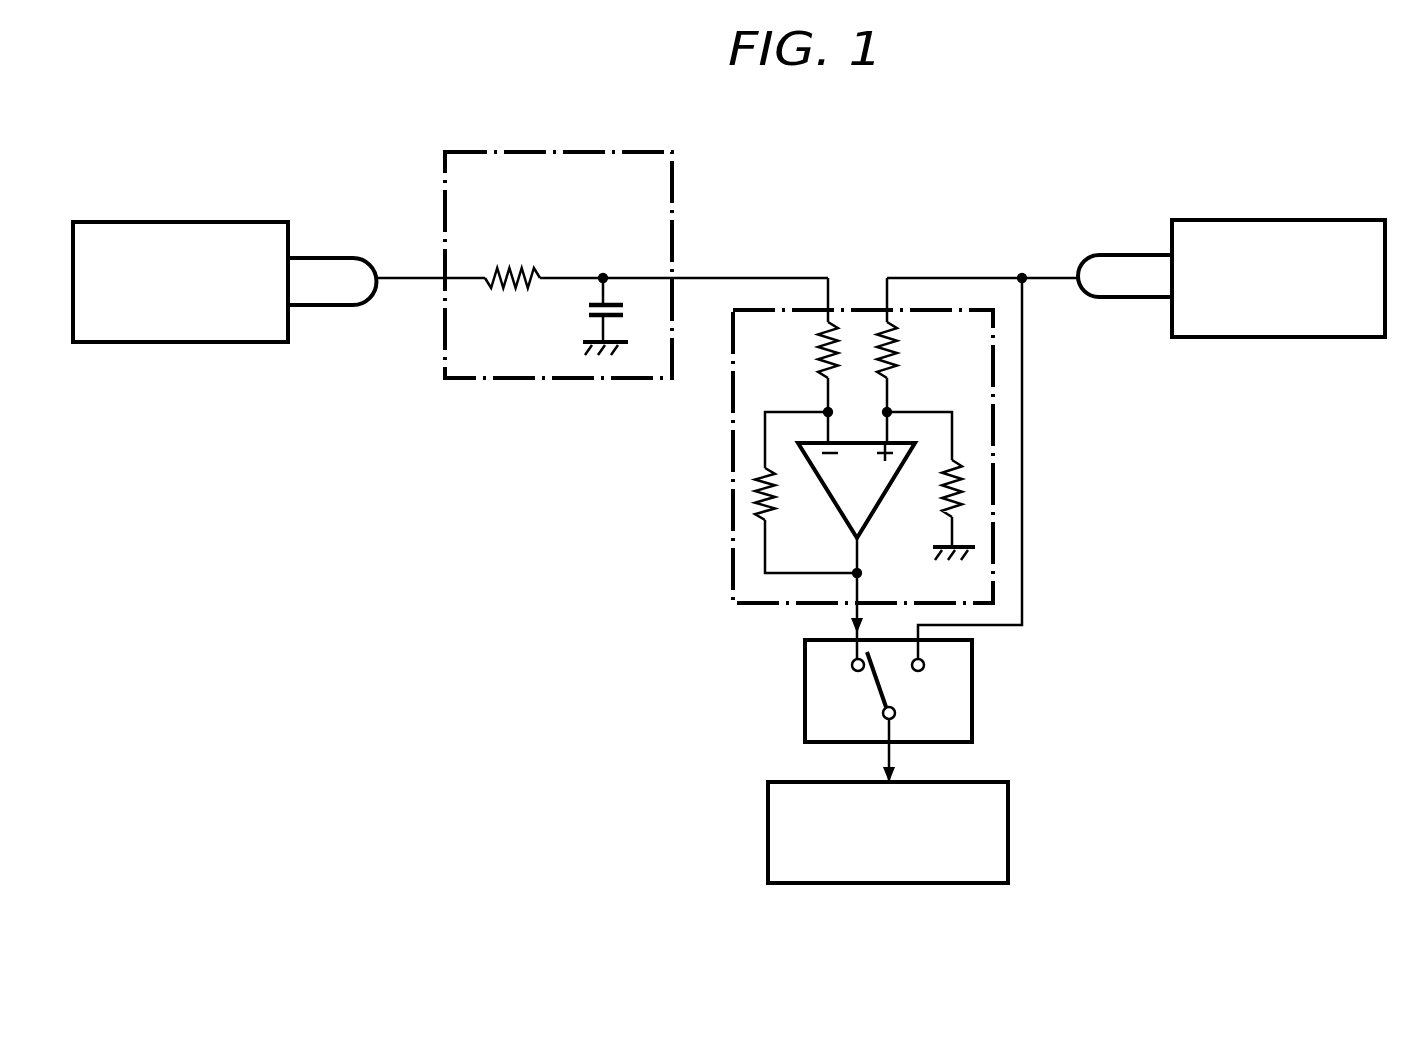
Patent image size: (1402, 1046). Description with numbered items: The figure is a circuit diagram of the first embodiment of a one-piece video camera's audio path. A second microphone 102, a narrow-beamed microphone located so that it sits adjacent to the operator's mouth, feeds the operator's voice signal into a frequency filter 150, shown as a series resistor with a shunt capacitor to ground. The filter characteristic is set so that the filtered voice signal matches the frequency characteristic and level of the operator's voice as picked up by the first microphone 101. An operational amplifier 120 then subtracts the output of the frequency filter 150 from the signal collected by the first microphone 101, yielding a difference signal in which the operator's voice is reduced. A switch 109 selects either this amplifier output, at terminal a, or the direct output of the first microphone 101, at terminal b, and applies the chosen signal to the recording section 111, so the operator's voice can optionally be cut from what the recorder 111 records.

The first microphone 101 is at (1252, 220).
The second microphone 102 is at (190, 222).
The frequency filter 150 is at (675, 228).
The operational amplifier 120 is at (733, 420).
The switch 109 is at (972, 710).
The recording section 111 is at (1008, 825).